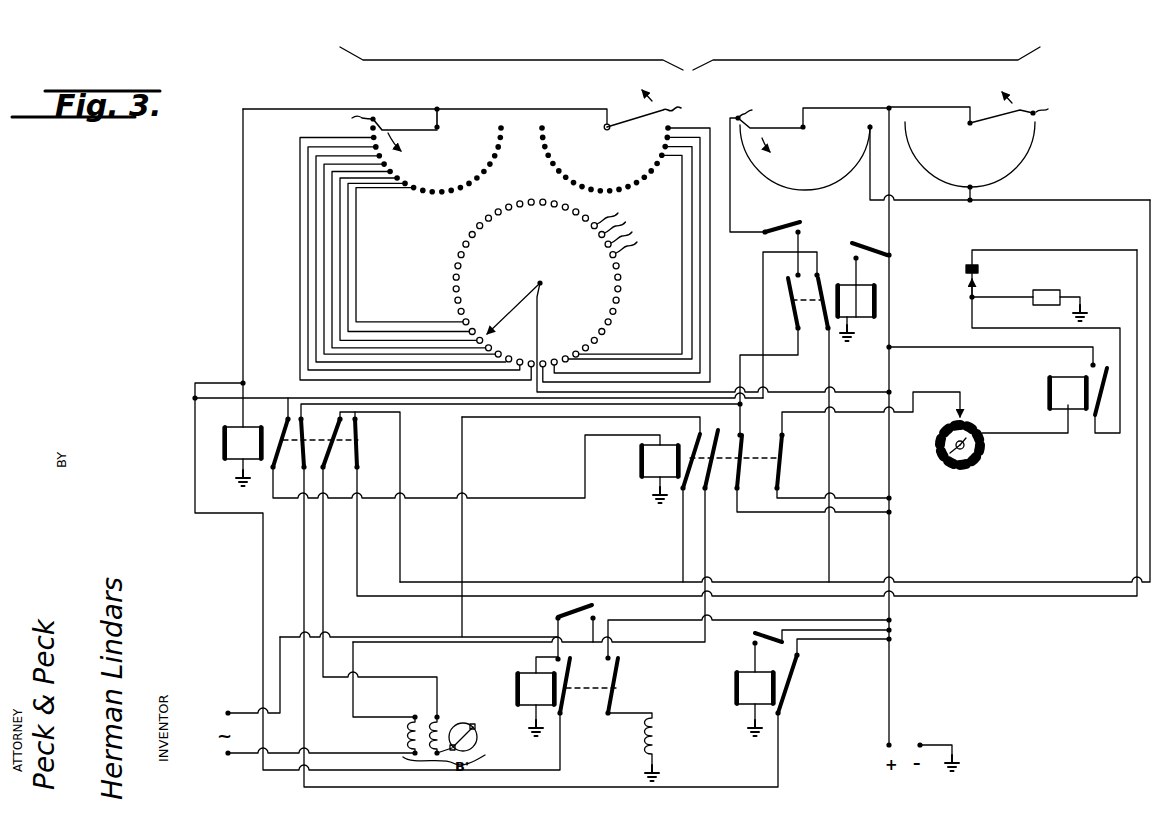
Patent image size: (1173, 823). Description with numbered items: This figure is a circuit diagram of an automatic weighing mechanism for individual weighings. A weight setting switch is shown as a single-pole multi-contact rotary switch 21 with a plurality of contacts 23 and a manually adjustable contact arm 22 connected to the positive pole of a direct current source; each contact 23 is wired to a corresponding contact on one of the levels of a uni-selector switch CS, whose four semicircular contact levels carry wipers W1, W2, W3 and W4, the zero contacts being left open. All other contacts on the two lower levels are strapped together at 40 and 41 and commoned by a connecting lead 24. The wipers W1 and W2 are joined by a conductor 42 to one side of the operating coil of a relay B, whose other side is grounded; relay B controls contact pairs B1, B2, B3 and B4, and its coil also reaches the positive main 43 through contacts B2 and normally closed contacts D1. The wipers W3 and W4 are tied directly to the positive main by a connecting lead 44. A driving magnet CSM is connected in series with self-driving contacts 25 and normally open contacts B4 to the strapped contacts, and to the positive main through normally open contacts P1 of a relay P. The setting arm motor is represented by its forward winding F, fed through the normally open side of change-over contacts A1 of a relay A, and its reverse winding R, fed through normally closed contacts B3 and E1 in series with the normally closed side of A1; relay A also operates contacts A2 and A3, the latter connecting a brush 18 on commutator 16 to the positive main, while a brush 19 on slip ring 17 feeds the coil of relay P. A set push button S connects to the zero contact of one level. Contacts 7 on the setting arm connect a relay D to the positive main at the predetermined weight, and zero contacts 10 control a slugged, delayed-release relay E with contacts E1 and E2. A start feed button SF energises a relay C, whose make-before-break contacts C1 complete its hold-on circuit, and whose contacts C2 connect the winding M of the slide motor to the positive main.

The conductor 42 is at (497, 109).
The connecting lead 44 is at (870, 106).
The strapped contacts 41 is at (1000, 180).
The strapped contacts 40 is at (775, 189).
The connecting lead 24 is at (897, 200).
The zero contacts 10 is at (856, 243).
The contacts 23 is at (625, 229).
The contact arm 22 is at (517, 299).
The rotary switch 21 is at (584, 283).
The self-driving contacts 25 is at (979, 276).
The brush 18 is at (961, 411).
The brush 19 is at (987, 450).
The slip ring 17 is at (943, 465).
The commutator 16 is at (966, 468).
The positive main 43 is at (890, 535).
The contacts 7 is at (745, 638).
The uni-selector switch CS is at (690, 54).
The wiper W1 is at (436, 128).
The wiper W2 is at (607, 128).
The wiper W3 is at (789, 101).
The wiper W4 is at (975, 124).
The set push button S is at (802, 222).
The relay E is at (862, 318).
The contacts E1 is at (818, 274).
The contacts E2 is at (796, 274).
The driving magnet CSM is at (1043, 290).
The relay P is at (1048, 394).
The contacts P1 is at (1092, 365).
The relay B is at (223, 444).
The contacts B1 is at (287, 416).
The contacts B2 is at (301, 418).
The contacts B3 is at (340, 418).
The contacts B4 is at (355, 418).
The relay A is at (644, 489).
The change-over contacts A1 is at (718, 430).
The contacts A2 is at (740, 435).
The contacts A3 is at (782, 435).
The start feed button SF is at (582, 607).
The relay C is at (524, 712).
The make-before-break contacts C1 is at (562, 660).
The contacts C2 is at (613, 658).
The winding M is at (658, 741).
The relay D is at (738, 711).
The contacts D1 is at (800, 655).
The reverse winding R is at (441, 717).
The forward winding F is at (410, 737).